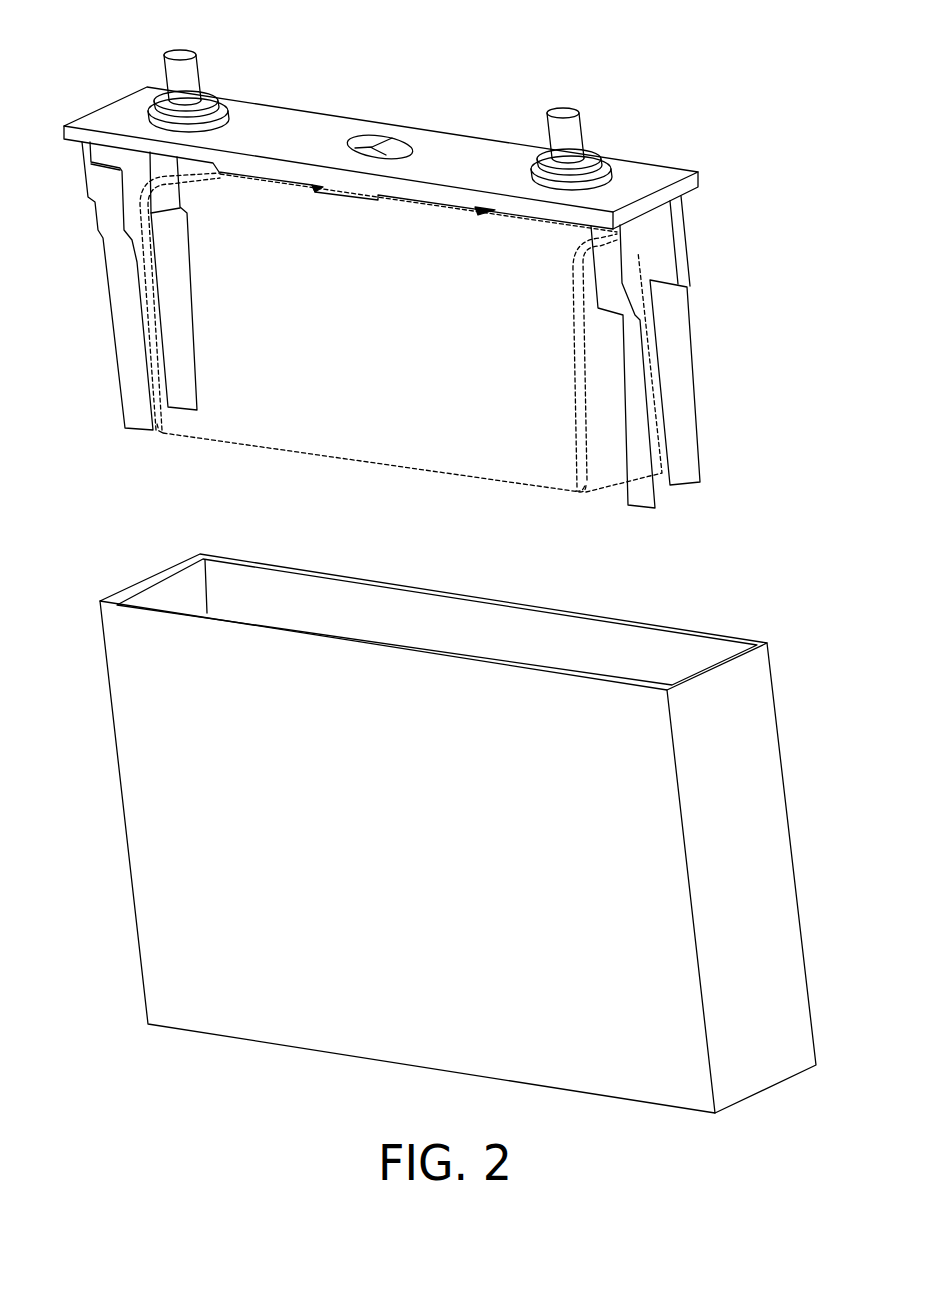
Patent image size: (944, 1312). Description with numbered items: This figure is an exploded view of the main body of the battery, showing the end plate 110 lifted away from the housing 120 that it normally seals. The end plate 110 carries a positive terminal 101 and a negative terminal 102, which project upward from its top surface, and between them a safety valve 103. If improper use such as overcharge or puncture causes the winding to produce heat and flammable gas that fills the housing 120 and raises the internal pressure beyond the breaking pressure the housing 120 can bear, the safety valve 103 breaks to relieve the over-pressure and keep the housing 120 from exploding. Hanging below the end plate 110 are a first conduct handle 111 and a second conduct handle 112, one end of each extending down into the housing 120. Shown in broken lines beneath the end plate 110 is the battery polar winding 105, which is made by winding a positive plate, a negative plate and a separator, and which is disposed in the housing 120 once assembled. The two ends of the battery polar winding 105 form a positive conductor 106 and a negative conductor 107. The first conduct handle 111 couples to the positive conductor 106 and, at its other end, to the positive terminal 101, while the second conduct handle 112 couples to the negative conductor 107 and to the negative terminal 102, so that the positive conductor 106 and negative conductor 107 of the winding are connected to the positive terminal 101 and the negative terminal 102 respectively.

The positive terminal 101 is at (181, 52).
The negative terminal 102 is at (564, 110).
The safety valve 103 is at (375, 136).
The battery polar winding 105 is at (355, 471).
The positive conductor 106 is at (163, 435).
The negative conductor 107 is at (583, 489).
The end plate 110 is at (636, 178).
The first conduct handle 111 is at (127, 317).
The second conduct handle 112 is at (692, 380).
The housing 120 is at (753, 892).